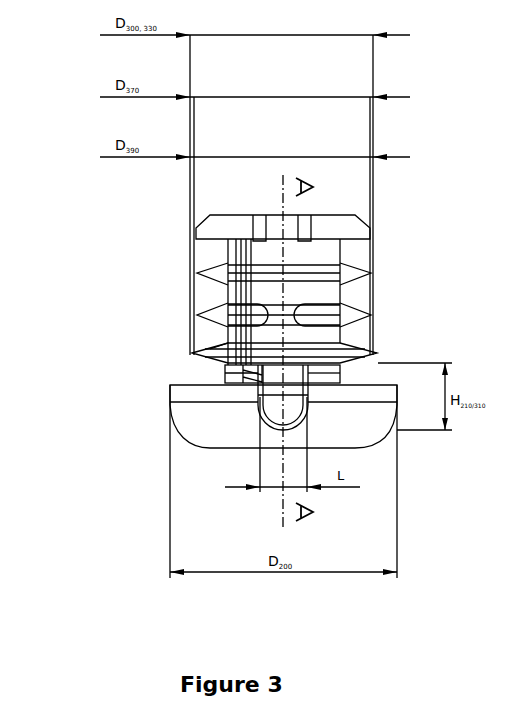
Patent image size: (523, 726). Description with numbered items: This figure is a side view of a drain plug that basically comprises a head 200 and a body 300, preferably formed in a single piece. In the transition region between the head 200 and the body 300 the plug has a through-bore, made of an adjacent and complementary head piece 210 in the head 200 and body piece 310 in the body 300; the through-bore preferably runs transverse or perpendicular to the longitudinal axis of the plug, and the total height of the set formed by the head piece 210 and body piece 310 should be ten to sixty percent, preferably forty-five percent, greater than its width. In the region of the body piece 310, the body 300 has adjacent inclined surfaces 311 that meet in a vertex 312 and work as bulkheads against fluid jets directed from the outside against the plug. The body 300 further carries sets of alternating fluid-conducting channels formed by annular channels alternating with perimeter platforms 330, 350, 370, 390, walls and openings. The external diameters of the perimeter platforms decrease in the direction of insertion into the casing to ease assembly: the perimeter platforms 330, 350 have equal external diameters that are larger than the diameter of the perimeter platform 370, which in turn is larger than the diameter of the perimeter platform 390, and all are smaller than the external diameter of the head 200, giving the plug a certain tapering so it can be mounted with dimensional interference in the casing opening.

The head 200 is at (210, 442).
The head piece 210 is at (268, 405).
The body 300 is at (237, 213).
The body piece 310 is at (228, 374).
The inclined surfaces 311 is at (210, 353).
The vertex 312 is at (262, 397).
The perimeter platform 330 is at (362, 355).
The perimeter platform 350 is at (362, 316).
The perimeter platform 370 is at (365, 274).
The perimeter platform 390 is at (362, 223).